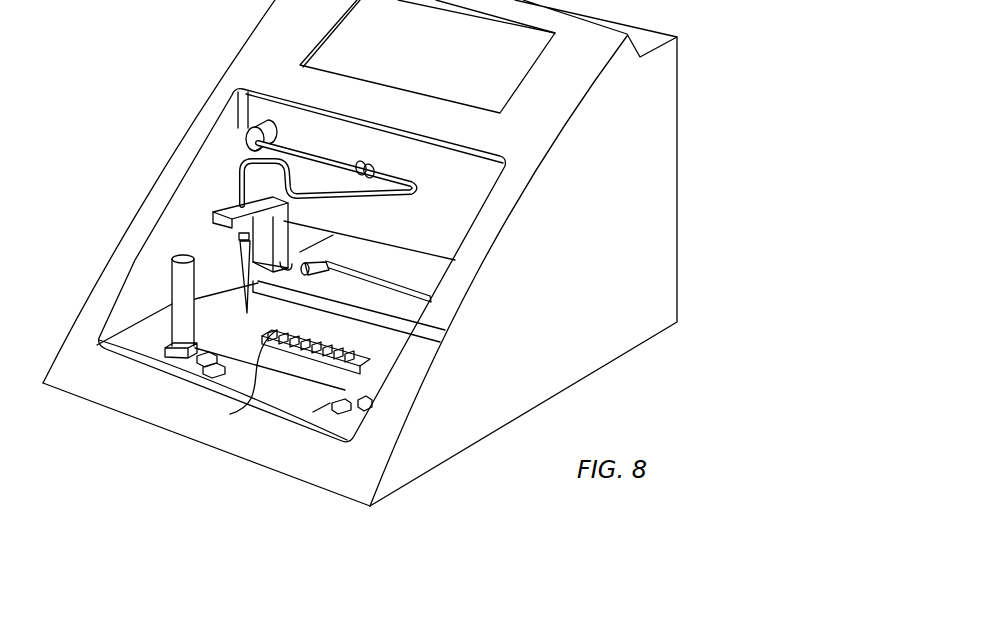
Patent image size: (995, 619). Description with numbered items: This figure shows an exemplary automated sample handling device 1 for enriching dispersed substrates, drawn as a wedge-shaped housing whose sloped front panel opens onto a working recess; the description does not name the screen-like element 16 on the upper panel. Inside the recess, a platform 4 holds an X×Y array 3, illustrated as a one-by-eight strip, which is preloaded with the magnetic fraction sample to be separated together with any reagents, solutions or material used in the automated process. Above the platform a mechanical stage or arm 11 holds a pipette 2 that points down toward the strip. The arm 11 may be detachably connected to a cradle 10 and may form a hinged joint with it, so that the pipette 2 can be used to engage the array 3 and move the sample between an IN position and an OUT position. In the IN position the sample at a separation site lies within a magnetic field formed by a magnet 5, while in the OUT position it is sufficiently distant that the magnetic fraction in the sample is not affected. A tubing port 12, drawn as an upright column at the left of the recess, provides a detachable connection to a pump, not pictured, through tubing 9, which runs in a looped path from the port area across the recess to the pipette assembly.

The device housing 1 is at (247, 60).
The pipette 2 is at (237, 250).
The X×Y array 3 is at (348, 356).
The platform 4 is at (206, 354).
The magnet 5 is at (246, 375).
The tubing 9 is at (300, 148).
The cradle 10 is at (332, 255).
The arm 11 is at (227, 207).
The tubing port 12 is at (182, 283).
The display screen 16 is at (502, 80).